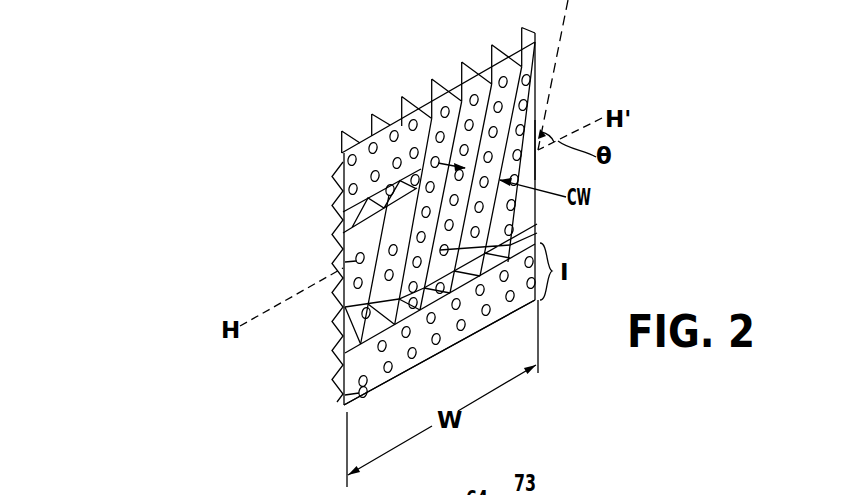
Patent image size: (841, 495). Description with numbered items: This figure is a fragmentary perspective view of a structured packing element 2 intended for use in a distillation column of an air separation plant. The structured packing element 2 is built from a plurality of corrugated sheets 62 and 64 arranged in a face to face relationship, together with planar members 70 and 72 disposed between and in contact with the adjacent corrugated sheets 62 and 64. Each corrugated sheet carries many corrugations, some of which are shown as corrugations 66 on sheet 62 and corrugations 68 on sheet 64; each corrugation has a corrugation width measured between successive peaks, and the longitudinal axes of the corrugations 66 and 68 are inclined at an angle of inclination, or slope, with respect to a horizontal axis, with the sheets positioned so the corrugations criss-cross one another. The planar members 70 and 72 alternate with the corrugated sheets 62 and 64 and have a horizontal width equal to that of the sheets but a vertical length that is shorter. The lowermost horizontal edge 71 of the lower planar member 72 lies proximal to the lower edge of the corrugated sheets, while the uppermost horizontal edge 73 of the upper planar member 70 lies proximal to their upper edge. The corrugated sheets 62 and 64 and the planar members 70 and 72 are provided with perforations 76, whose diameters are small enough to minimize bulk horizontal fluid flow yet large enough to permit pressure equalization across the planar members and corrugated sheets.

The structured packing element 2 is at (300, 335).
The corrugated sheet 62 is at (371, 113).
The corrugated sheet 64 is at (538, 130).
The corrugations 66 is at (433, 78).
The corrugations 68 is at (540, 60).
The upper planar member 70 is at (342, 172).
The lowermost horizontal edge 71 is at (388, 388).
The lower planar member 72 is at (343, 390).
The uppermost horizontal edge 73 is at (383, 112).
The perforations 76 is at (356, 160).